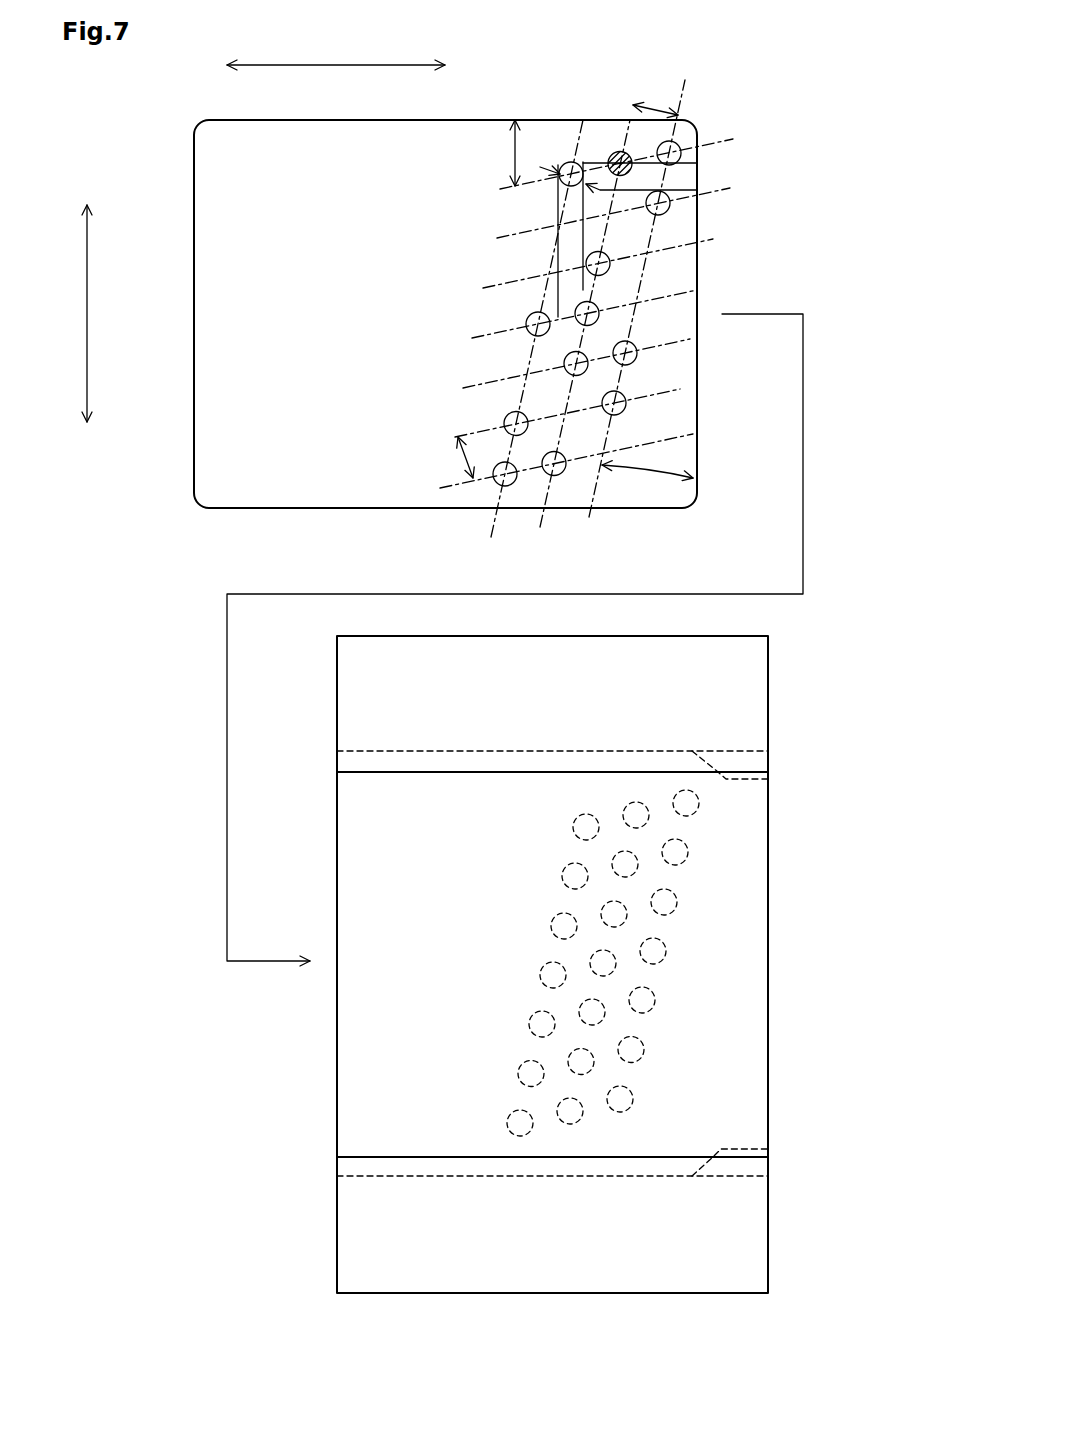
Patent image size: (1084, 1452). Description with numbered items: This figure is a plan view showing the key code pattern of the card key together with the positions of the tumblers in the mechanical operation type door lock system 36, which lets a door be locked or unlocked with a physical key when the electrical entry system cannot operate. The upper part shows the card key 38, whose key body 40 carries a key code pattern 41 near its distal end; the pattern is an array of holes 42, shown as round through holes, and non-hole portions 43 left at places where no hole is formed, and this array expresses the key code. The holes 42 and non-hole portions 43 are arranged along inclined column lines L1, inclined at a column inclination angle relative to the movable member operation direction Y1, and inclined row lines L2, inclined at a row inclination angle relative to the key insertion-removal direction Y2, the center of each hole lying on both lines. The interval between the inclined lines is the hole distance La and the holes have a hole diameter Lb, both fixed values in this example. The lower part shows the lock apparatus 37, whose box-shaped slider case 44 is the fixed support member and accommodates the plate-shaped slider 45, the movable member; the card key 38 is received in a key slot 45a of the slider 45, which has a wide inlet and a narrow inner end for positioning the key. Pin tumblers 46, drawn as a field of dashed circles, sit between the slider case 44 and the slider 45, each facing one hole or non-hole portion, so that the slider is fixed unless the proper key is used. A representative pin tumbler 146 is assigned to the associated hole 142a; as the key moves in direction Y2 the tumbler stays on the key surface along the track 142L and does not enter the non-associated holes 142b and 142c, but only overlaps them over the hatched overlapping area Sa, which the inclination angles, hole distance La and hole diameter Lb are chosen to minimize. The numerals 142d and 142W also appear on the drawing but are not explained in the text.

The mechanical operation type door lock system 36 is at (136, 141).
The lock apparatus 37 is at (642, 1293).
The card key 38 is at (194, 462).
The key body 40 is at (212, 350).
The key code pattern 41 is at (672, 424).
The holes 42 is at (516, 436).
The non-hole portions 43 is at (558, 272).
The slider case 44 is at (512, 1277).
The slider 45 is at (766, 750).
The key slot 45a is at (748, 780).
The pin tumblers 46 is at (649, 817).
The pin tumbler 146 is at (572, 822).
The associated hole 142a is at (568, 162).
The non-associated hole 142b is at (618, 152).
The non-associated hole 142c is at (676, 143).
The fourth nozzle 142d is at (558, 317).
The track 142L is at (583, 120).
The nozzle width 142W is at (558, 272).
The movable member operation direction Y1 is at (85, 313).
The key insertion-removal direction Y2 is at (336, 62).
The hole distance La is at (662, 108).
The hole diameter Lb is at (535, 153).
The inclined column lines L1 is at (595, 492).
The inclined row lines L2 is at (508, 189).
The overlapping area Sa is at (632, 170).